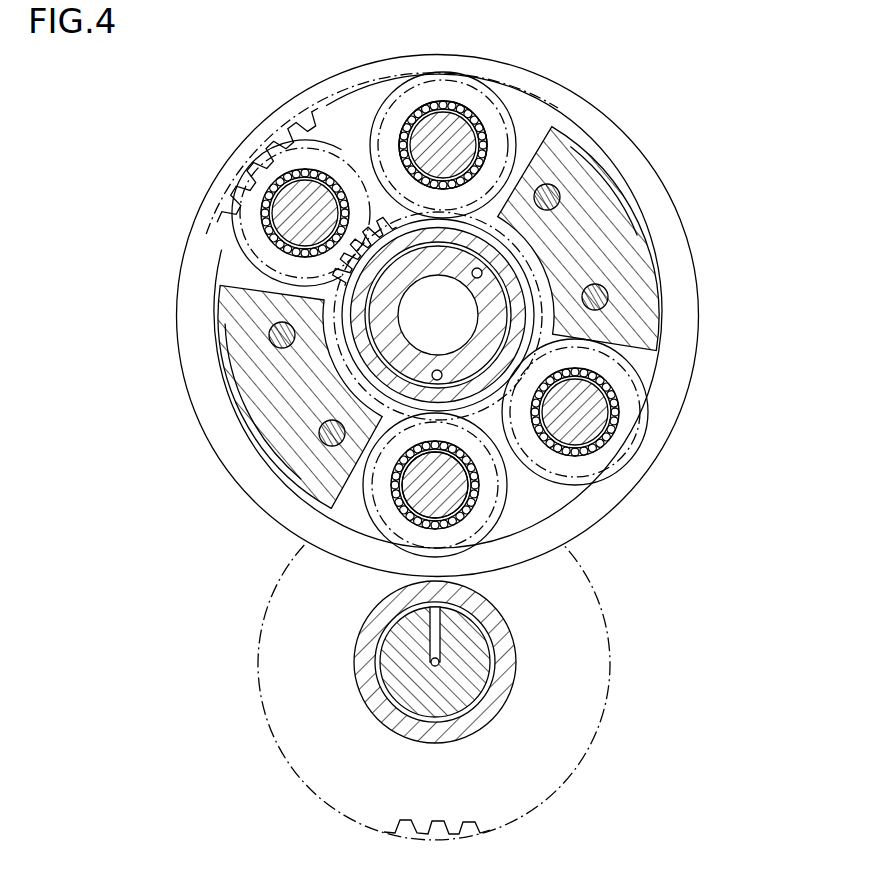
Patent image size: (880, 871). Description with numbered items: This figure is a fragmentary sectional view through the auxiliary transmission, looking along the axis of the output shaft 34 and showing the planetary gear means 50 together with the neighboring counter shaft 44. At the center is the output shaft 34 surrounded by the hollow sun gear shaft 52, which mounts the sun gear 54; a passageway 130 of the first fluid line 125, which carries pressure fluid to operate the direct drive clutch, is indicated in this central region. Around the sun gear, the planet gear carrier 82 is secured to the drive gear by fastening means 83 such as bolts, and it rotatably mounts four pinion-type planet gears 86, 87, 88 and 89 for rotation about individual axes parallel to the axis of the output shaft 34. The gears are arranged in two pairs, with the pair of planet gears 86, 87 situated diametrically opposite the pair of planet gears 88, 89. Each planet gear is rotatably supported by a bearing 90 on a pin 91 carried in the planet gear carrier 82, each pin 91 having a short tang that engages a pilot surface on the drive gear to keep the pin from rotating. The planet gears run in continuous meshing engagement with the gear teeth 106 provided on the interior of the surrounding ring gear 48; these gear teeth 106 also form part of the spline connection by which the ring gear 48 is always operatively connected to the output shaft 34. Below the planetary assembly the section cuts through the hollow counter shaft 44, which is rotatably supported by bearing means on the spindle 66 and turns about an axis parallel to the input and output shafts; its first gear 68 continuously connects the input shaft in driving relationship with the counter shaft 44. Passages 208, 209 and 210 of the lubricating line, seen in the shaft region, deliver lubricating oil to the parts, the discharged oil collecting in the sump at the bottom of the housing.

The output shaft 34 is at (405, 352).
The counter shaft 44 is at (507, 673).
The ring gear 48 is at (672, 441).
The planetary gear means 50 is at (613, 477).
The sun gear shaft 52 is at (513, 287).
The sun gear 54 is at (327, 292).
The spindle 66 is at (492, 710).
The first gear 68 is at (447, 836).
The planet gear carrier 82 is at (645, 280).
The fastening means 83 is at (323, 424).
The planet gear 86 is at (268, 185).
The planet gear 87 is at (482, 100).
The planet gear 88 is at (632, 400).
The planet gear 89 is at (400, 522).
The bearing 90 is at (490, 137).
The pin 91 is at (460, 487).
The gear teeth 106 is at (307, 130).
The first fluid line 125 is at (120, 870).
The passageway 130 is at (481, 270).
The passage 208 is at (350, 444).
The passage 209 is at (430, 666).
The passage 210 is at (442, 632).